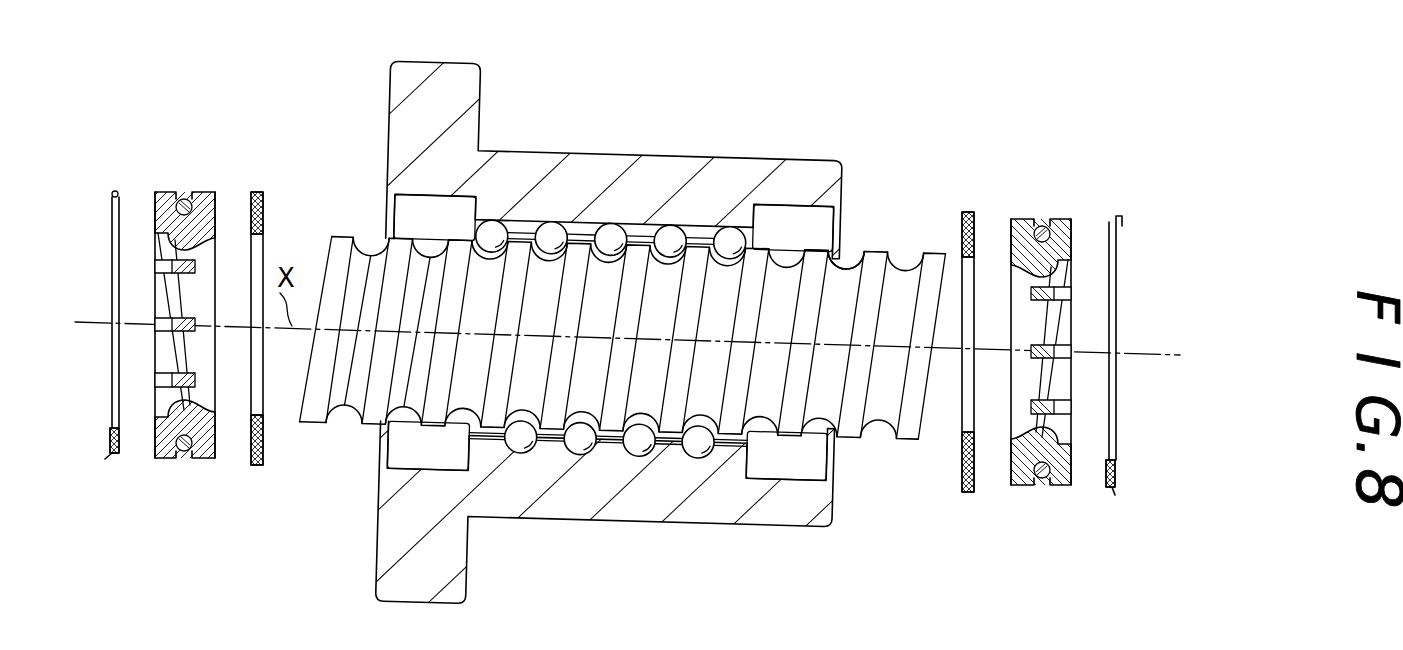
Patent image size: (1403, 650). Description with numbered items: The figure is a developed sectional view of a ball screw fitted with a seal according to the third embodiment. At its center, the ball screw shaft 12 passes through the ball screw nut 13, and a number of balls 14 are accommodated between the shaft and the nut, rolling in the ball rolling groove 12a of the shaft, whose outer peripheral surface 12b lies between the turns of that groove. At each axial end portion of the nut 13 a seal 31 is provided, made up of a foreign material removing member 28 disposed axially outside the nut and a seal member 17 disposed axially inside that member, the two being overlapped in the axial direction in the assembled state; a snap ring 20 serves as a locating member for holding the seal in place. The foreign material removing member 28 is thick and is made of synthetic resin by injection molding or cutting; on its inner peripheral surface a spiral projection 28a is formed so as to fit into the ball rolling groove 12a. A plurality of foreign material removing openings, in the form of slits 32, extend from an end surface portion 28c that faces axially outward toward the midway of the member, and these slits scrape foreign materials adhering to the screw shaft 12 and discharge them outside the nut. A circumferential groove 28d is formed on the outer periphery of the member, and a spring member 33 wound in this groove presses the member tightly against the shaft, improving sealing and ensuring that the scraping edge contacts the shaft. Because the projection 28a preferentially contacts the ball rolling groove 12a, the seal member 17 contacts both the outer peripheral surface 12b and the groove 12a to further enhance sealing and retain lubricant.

The ball screw shaft 12 is at (878, 255).
The ball rolling groove 12a is at (851, 261).
The outer peripheral surface 12b is at (849, 259).
The ball screw nut 13 is at (675, 155).
The balls 14 is at (678, 232).
The seal member 17 is at (261, 191).
The snap ring 20 is at (105, 460).
The foreign material removing member 28 is at (170, 191).
The projection 28a is at (213, 252).
The end surface portion 28c is at (155, 230).
The groove 28d is at (183, 458).
The seal 31 is at (293, 99).
The foreign material removing openings 32 is at (157, 374).
The spring member 33 is at (175, 452).